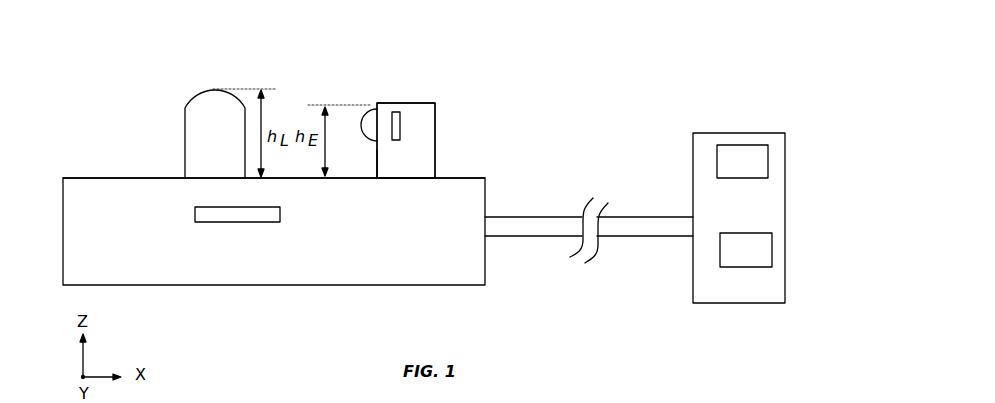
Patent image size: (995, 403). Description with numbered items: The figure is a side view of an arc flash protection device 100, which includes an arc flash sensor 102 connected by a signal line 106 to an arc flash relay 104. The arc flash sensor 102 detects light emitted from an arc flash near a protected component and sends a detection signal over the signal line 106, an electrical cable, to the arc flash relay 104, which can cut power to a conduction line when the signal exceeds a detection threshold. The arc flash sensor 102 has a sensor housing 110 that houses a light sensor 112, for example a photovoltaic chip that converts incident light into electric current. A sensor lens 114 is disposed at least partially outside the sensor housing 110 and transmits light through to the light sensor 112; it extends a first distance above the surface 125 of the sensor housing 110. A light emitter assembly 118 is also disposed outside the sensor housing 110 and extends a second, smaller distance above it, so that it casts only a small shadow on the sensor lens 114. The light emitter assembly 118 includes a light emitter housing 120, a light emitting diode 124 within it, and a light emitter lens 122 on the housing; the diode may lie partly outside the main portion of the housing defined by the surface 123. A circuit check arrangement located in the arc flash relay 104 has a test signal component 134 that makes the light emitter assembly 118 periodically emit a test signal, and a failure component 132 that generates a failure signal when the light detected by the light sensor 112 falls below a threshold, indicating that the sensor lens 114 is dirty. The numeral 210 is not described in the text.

The arc flash protection device 100 is at (466, 333).
The arc flash sensor 102 is at (162, 51).
The arc flash relay 104 is at (695, 153).
The signal line 106 is at (568, 217).
The sensor housing 110 is at (335, 288).
The light sensor 112 is at (213, 219).
The sensor lens 114 is at (185, 143).
The light emitter assembly 118 is at (428, 95).
The light emitter housing 120 is at (412, 103).
The light emitter lens 122 is at (365, 112).
The surface 123 is at (373, 168).
The light emitting diode 124 is at (402, 125).
The surface 125 is at (100, 178).
The failure component 132 is at (767, 182).
The test signal component 134 is at (765, 268).
The reference 210 is at (725, 395).